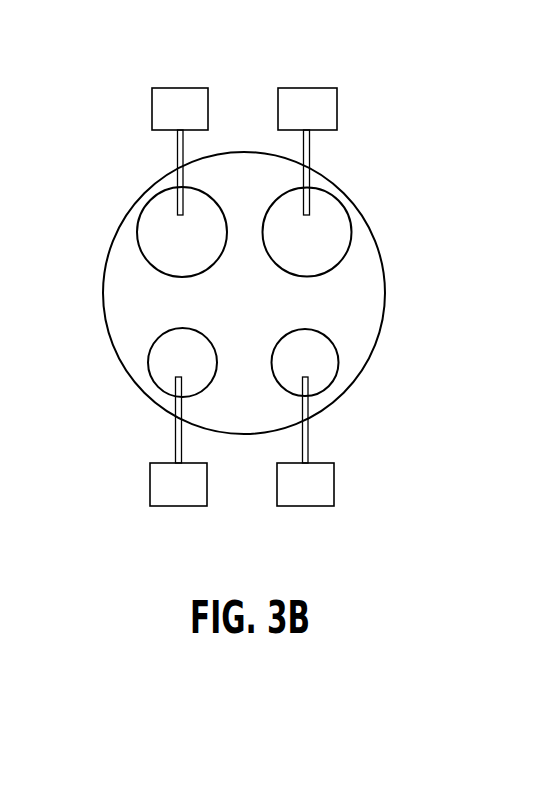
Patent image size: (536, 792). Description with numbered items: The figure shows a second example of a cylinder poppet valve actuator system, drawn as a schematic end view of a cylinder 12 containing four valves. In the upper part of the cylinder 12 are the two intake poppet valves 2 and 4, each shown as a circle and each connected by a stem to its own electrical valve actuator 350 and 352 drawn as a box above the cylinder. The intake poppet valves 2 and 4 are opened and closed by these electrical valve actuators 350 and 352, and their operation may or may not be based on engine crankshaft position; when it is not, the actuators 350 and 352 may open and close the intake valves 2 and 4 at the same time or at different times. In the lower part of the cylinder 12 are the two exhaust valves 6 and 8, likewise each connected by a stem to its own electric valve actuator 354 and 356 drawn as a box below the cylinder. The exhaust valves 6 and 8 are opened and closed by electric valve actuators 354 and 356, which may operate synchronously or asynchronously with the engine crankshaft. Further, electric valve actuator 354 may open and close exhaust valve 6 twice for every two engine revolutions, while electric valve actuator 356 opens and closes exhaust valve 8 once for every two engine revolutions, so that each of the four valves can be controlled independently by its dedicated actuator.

The wheel / circular body 12 is at (216, 343).
The intake poppet valve 2 is at (182, 232).
The intake poppet valve 4 is at (307, 232).
The exhaust valve 6 is at (182, 362).
The exhaust valve 8 is at (305, 362).
The electrical valve actuator 350 is at (179, 88).
The electrical valve actuator 352 is at (308, 88).
The electric valve actuator 354 is at (150, 470).
The electric valve actuator 356 is at (334, 476).